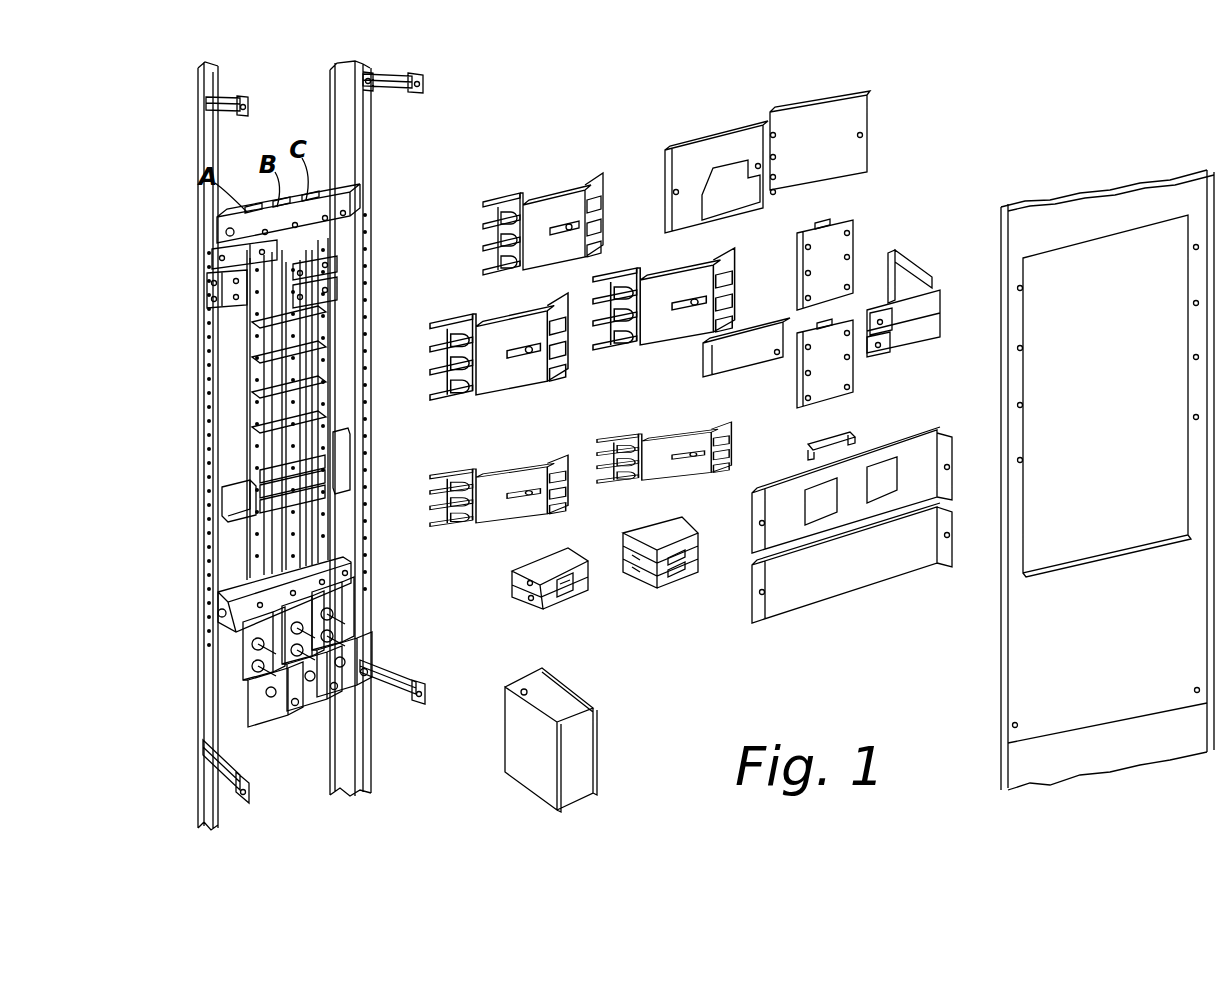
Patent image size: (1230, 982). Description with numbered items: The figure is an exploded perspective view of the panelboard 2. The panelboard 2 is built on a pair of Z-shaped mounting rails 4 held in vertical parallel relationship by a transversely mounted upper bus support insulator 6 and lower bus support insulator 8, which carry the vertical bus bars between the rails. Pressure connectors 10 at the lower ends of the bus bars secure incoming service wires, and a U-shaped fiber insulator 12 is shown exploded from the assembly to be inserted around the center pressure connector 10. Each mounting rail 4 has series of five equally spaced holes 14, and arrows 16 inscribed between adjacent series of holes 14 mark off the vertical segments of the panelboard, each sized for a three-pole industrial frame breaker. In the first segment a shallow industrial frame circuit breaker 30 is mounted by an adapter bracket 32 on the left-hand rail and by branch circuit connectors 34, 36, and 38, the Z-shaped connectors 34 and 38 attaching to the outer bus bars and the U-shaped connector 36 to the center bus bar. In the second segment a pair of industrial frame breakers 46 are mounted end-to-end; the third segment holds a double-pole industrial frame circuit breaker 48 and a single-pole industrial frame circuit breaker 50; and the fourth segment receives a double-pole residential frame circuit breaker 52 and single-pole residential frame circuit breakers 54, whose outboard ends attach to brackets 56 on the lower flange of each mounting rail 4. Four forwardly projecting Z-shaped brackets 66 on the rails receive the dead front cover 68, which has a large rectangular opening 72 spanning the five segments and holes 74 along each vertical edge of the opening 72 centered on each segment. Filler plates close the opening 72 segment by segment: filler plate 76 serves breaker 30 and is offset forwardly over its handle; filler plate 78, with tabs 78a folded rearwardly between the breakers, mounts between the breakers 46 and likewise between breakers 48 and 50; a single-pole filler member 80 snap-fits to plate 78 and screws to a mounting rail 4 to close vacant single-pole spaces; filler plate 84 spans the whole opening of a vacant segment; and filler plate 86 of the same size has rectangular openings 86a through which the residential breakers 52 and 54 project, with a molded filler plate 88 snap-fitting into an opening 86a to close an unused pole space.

The panelboard 2 is at (158, 335).
The Z-shaped mounting rails 4 is at (205, 157).
The upper bus support insulator 6 is at (350, 212).
The lower bus support insulator 8 is at (226, 602).
The pressure connectors 10 is at (343, 695).
The U-shaped fiber insulator 12 is at (505, 754).
The holes 14 is at (208, 386).
The arrows 16 is at (205, 405).
The industrial frame circuit breaker 30 is at (558, 185).
The adapter bracket 32 is at (220, 292).
The branch circuit connector 34 is at (213, 253).
The branch circuit connector 36 is at (312, 272).
The branch circuit connector 38 is at (312, 294).
The industrial frame breakers 46 is at (612, 266).
The double-pole industrial frame circuit breaker 48 is at (543, 450).
The single-pole industrial frame circuit breaker 50 is at (683, 425).
The double-pole residential frame circuit breaker 52 is at (562, 560).
The single-pole residential frame circuit breakers 54 is at (662, 530).
The brackets 56 is at (222, 496).
The Z-shaped brackets 66 is at (215, 102).
The dead front cover 68 is at (1082, 480).
The rectangular opening 72 is at (1082, 562).
The holes 74 is at (1192, 355).
The filler plate 76 is at (862, 126).
The filler plate 78 is at (850, 243).
The tabs 78a is at (825, 228).
The single-pole filler member 80 is at (932, 310).
The filler plate 84 is at (852, 563).
The filler plate 86 is at (849, 476).
The rectangular openings 86a is at (877, 470).
The molded filler plate 88 is at (838, 440).